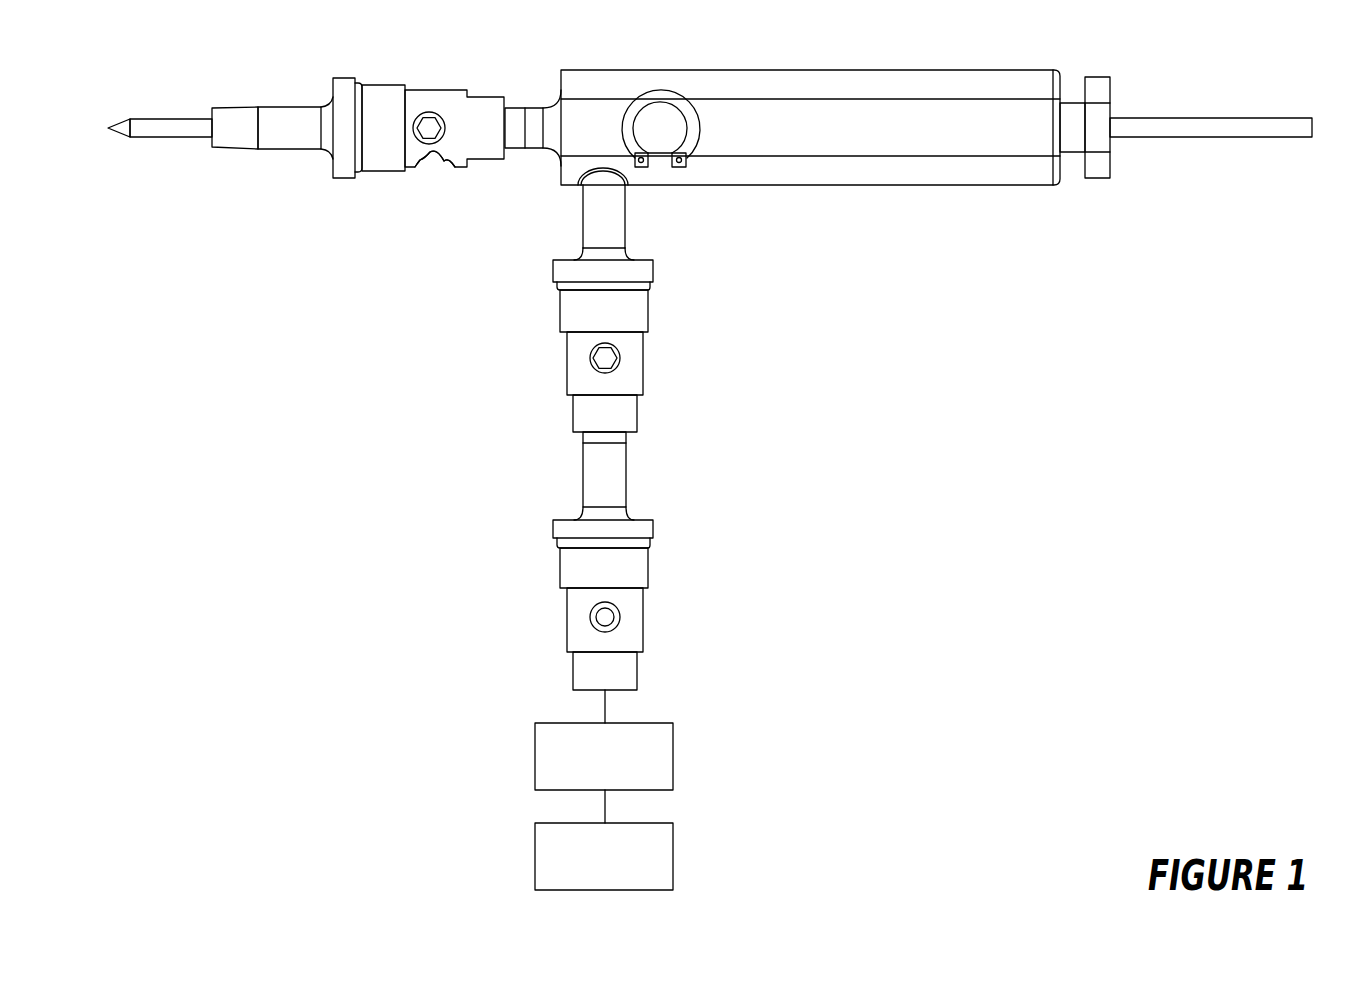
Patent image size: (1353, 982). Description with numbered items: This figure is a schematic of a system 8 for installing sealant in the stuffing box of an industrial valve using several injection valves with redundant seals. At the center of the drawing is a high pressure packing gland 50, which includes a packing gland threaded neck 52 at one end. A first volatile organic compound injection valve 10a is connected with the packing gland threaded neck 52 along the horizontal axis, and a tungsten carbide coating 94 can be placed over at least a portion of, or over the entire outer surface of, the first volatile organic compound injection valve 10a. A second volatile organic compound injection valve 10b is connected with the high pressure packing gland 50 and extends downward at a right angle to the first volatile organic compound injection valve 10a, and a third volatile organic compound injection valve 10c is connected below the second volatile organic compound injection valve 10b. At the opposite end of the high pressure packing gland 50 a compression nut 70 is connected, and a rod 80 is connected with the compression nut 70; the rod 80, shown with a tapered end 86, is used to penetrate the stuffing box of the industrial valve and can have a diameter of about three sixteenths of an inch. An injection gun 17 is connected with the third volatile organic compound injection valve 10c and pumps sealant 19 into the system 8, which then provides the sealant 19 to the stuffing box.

The system 8 is at (1186, 725).
The first volatile organic compound injection valve 10a is at (358, 128).
The second volatile organic compound injection valve 10b is at (643, 372).
The third volatile organic compound injection valve 10c is at (643, 628).
The injection gun 17 is at (673, 758).
The sealant 19 is at (673, 858).
The high pressure packing gland 50 is at (806, 70).
The packing gland threaded neck 52 is at (531, 108).
The compression nut 70 is at (1098, 77).
The rod 80 is at (1212, 118).
The tapered end 86 is at (111, 125).
The tungsten carbide coating 94 is at (436, 154).